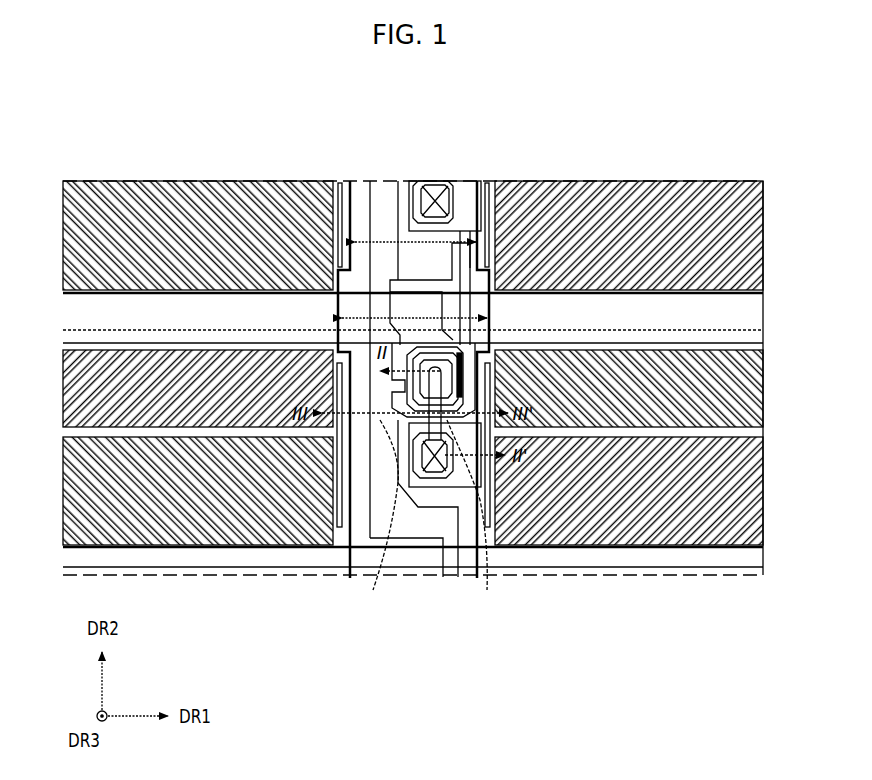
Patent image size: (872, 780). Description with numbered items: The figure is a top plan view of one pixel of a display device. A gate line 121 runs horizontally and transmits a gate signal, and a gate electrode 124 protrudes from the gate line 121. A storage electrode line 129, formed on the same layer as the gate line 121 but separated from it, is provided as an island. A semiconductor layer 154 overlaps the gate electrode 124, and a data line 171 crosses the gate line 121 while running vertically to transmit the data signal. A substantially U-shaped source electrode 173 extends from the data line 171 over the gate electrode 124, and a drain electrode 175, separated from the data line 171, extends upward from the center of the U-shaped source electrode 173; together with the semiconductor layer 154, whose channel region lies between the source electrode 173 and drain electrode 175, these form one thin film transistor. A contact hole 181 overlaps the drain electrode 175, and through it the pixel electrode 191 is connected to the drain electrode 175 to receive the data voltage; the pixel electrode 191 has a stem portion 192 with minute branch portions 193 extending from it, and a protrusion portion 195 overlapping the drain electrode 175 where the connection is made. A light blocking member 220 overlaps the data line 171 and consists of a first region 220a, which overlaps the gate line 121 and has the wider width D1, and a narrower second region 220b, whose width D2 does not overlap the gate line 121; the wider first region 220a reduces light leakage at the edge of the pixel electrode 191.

The gate line 121 is at (648, 326).
The gate electrode 124 is at (400, 391).
The storage electrode line 129 is at (334, 515).
The semiconductor layer 154 is at (392, 520).
The data line 171 is at (402, 212).
The source electrode 173 is at (440, 312).
The drain electrode 175 is at (462, 458).
The contact hole 181 is at (448, 465).
The pixel electrode 191 is at (763, 472).
The stem portion 192 is at (718, 430).
The minute branch portions 193 is at (578, 357).
The protrusion portion 195 is at (428, 540).
The light blocking member 220 is at (268, 126).
The first region 220a is at (337, 302).
The second region 220b is at (350, 220).
The width D1 is at (425, 242).
The second width D2 is at (447, 318).